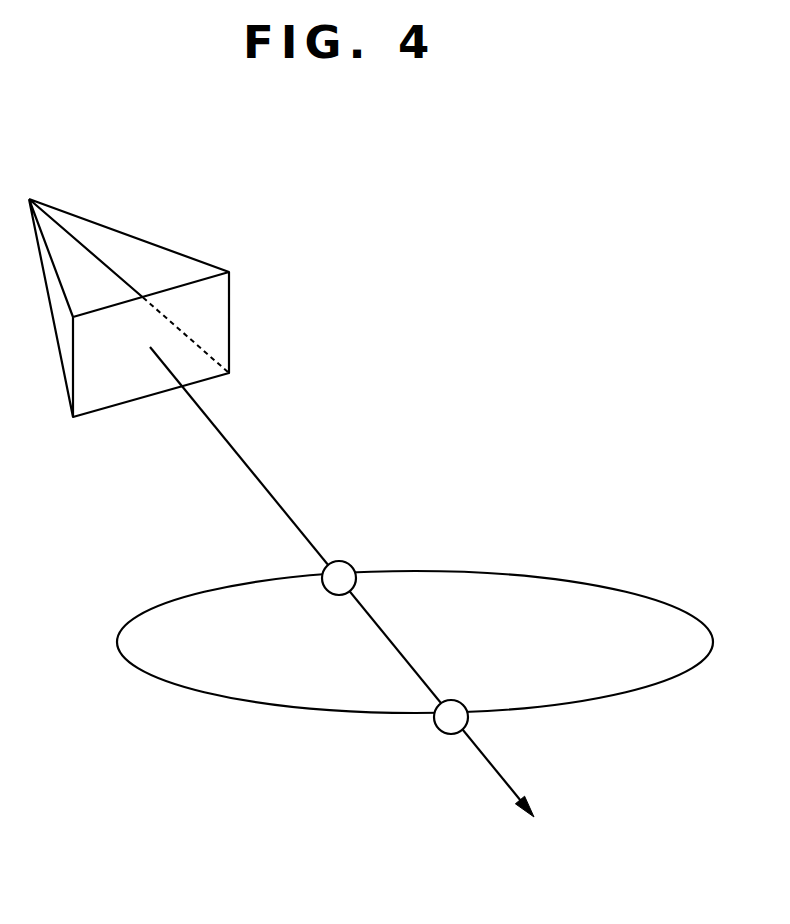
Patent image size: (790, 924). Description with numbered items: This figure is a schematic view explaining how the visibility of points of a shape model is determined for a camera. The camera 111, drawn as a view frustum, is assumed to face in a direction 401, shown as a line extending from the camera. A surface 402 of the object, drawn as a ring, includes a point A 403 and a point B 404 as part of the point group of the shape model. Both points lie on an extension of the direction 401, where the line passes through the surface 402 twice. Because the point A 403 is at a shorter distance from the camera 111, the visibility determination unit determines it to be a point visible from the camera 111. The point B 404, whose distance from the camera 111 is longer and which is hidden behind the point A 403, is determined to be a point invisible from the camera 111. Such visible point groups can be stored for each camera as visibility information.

The camera 111 is at (187, 255).
The direction 401 is at (240, 448).
The surface 402 is at (610, 588).
The point A 403 is at (347, 560).
The point B 404 is at (438, 737).